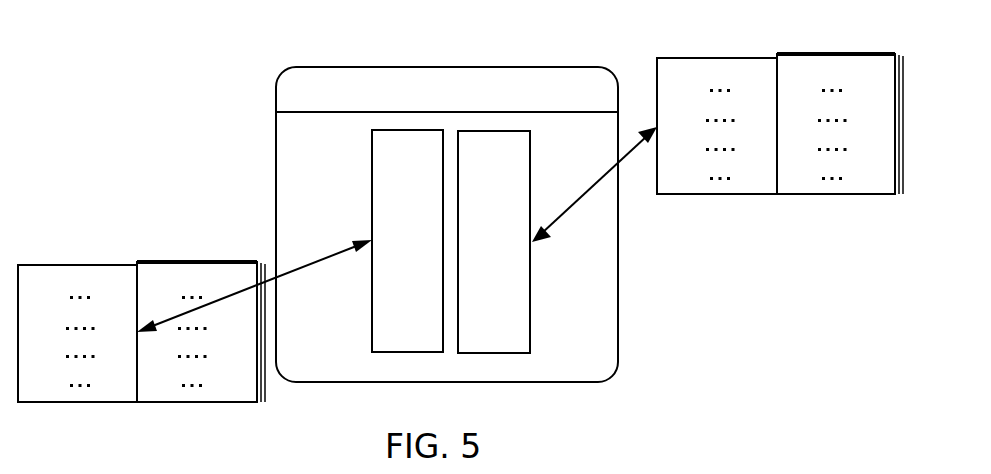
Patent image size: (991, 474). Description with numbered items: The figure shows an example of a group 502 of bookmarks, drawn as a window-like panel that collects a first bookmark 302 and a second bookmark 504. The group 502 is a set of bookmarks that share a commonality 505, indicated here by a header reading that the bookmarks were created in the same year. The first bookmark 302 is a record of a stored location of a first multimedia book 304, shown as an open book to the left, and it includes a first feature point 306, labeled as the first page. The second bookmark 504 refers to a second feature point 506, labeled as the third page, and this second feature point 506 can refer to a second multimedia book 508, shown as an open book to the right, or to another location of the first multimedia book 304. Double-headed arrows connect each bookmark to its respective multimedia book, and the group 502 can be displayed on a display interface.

The first bookmark 302 is at (371, 232).
The first multimedia book 304 is at (198, 290).
The first feature point 306 is at (374, 140).
The group 502 is at (447, 66).
The second bookmark 504 is at (513, 352).
The commonality 505 is at (337, 89).
The second feature point 506 is at (528, 152).
The second multimedia book 508 is at (758, 193).